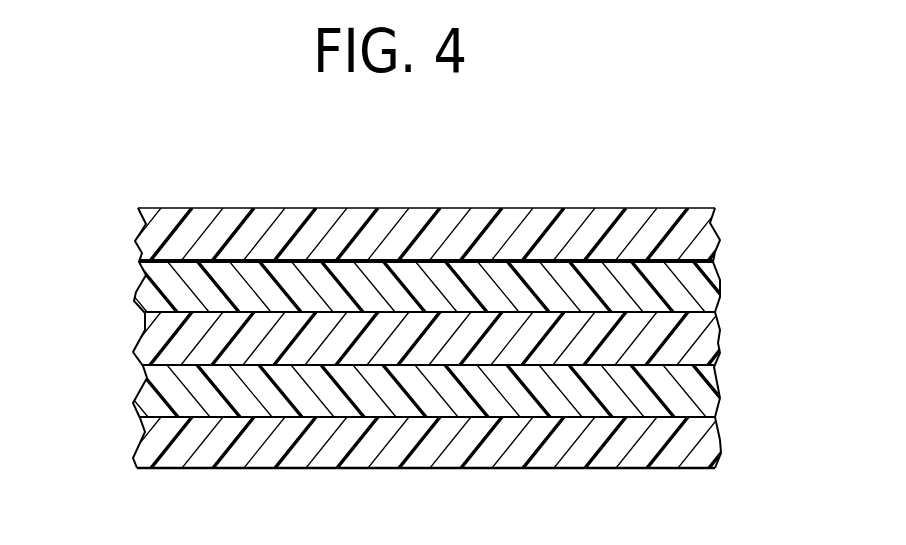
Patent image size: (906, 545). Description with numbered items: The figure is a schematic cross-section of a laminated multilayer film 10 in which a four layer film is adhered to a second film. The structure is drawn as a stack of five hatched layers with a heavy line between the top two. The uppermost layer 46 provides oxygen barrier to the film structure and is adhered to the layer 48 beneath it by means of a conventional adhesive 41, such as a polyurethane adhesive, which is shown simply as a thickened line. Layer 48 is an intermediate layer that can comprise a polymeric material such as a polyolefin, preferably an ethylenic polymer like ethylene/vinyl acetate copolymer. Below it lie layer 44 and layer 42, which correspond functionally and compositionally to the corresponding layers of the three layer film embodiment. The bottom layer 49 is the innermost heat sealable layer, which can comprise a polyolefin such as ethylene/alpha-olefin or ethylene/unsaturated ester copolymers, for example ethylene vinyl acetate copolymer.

The multilayer film 10 is at (427, 279).
The conventional adhesive 41 is at (140, 261).
The layer 42 is at (687, 387).
The layer 44 is at (703, 335).
The oxygen barrier layer 46 is at (703, 228).
The intermediate layer 48 is at (687, 285).
The innermost heat sealable layer 49 is at (698, 437).